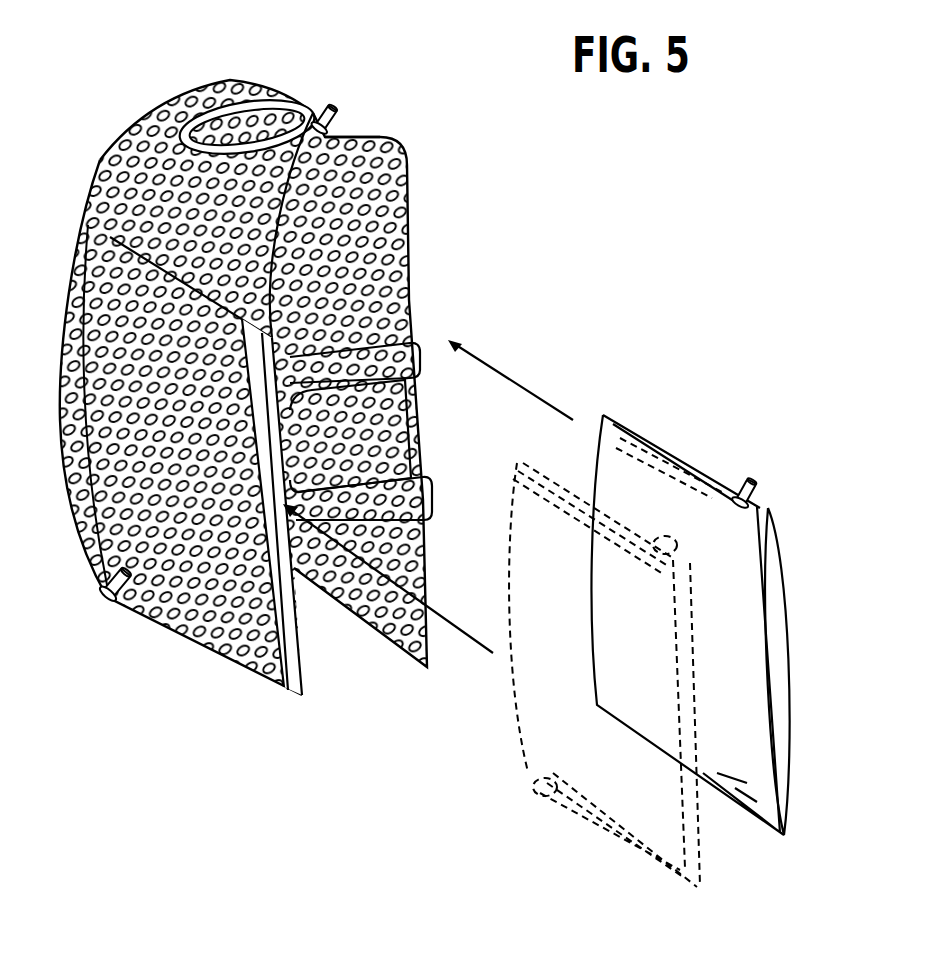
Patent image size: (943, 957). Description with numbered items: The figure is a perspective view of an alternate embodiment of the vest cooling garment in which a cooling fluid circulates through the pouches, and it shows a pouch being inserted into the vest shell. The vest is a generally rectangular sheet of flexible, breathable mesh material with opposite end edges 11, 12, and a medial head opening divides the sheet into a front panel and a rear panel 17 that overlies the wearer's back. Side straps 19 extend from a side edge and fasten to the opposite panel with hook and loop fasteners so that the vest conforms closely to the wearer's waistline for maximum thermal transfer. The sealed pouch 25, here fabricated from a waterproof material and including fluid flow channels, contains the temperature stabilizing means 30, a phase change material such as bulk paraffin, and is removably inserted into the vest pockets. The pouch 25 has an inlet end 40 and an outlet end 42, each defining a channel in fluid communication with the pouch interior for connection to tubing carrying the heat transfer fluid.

The end edge 11 is at (190, 100).
The end edge 12 is at (345, 137).
The rear panel 17 is at (407, 247).
The side straps 19 is at (428, 490).
The sealed pouch 25 is at (285, 628).
The temperature stabilizing means 30 is at (735, 672).
The inlet end 40 is at (336, 108).
The outlet end 42 is at (100, 595).